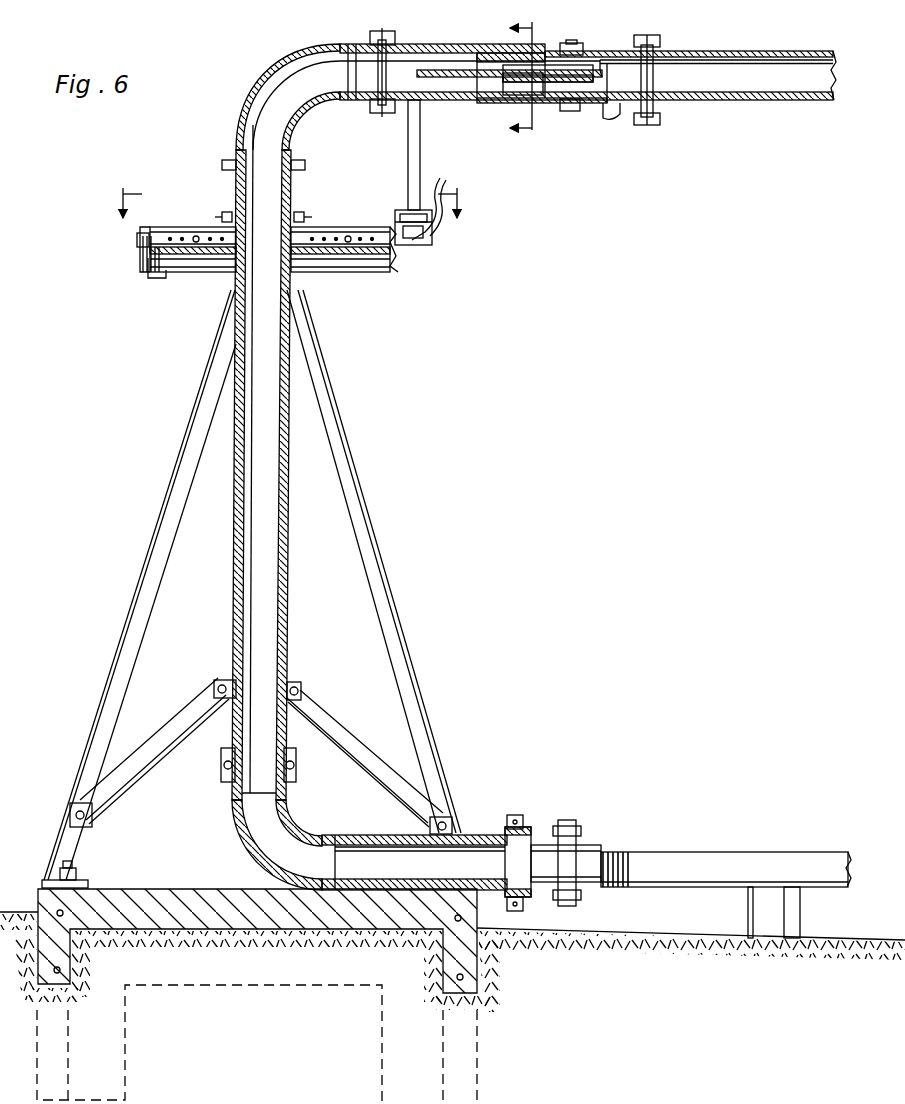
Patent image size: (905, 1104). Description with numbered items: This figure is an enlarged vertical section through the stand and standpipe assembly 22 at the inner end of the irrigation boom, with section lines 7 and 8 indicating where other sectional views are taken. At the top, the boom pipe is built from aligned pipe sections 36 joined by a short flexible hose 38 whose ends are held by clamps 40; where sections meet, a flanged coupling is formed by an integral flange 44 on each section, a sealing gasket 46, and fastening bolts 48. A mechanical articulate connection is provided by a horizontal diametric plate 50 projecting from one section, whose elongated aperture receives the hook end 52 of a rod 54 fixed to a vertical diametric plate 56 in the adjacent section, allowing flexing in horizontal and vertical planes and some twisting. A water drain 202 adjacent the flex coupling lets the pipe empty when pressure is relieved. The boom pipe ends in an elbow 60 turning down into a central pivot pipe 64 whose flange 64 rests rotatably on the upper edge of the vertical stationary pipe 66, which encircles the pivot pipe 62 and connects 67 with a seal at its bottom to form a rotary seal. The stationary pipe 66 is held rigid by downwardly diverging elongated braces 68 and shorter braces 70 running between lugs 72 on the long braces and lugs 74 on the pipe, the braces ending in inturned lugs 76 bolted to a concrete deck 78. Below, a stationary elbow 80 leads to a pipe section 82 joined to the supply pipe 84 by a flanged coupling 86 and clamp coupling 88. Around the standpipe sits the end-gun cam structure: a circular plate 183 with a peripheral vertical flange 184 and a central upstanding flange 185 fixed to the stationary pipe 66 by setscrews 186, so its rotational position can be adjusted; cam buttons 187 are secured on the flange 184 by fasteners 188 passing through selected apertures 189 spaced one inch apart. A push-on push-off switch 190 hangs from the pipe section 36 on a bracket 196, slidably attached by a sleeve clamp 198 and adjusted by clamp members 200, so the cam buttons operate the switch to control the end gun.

The stand and standpipe assembly 22 is at (372, 525).
The pipe section 36 is at (760, 70).
The flexible hose 38 is at (476, 53).
The clamp 40 is at (578, 46).
The flange 44 is at (656, 48).
The sealing gasket 46 is at (648, 38).
The fastening bolt 48 is at (660, 118).
The plate 50 is at (485, 100).
The hook end 52 is at (540, 68).
The rod 54 is at (625, 66).
The diametric plate 56 is at (578, 110).
The elbow 60 is at (262, 100).
The pivot pipe 62 is at (300, 205).
The flange 64 is at (236, 162).
The stationary pipe 66 is at (290, 405).
The seal connection 67 is at (290, 778).
The elongated brace 68 is at (392, 606).
The short brace 70 is at (325, 724).
The lug 72 is at (92, 822).
The lug 74 is at (296, 686).
The inturned lug 76 is at (80, 884).
The concrete deck 78 is at (150, 889).
The stationary elbow 80 is at (252, 860).
The pipe section 82 is at (460, 835).
The supply pipe 84 is at (610, 850).
The flanged coupling 86 is at (568, 822).
The clamp coupling 88 is at (514, 815).
The circular plate 183 is at (186, 274).
The peripheral vertical flange 184 is at (150, 268).
The upstanding flange 185 is at (231, 205).
The setscrew 186 is at (224, 216).
The cam button 187 is at (138, 246).
The fastener 188 is at (196, 237).
The aperture 189 is at (360, 237).
The push-on push-off switch 190 is at (418, 246).
The bracket 196 is at (408, 133).
The sleeve clamp 198 is at (410, 48).
The clamp member 200 is at (428, 228).
The water drain 202 is at (618, 118).
The section line 7 is at (507, 79).
The section line 8 is at (286, 218).